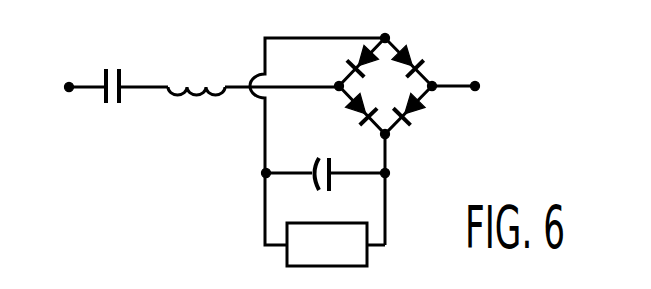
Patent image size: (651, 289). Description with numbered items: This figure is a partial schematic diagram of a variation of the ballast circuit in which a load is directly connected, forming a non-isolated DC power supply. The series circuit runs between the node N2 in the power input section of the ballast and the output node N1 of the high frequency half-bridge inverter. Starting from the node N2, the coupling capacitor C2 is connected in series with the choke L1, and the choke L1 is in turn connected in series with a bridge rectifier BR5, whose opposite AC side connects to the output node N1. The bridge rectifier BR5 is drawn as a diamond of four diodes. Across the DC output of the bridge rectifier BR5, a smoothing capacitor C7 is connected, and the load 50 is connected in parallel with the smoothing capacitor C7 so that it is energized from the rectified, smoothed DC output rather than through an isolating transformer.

The node N2 is at (74, 104).
The coupling capacitor C2 is at (135, 101).
The choke L1 is at (253, 79).
The bridge rectifier BR5 is at (424, 97).
The output node N1 is at (467, 103).
The smoothing capacitor C7 is at (326, 189).
The load 50 is at (350, 267).